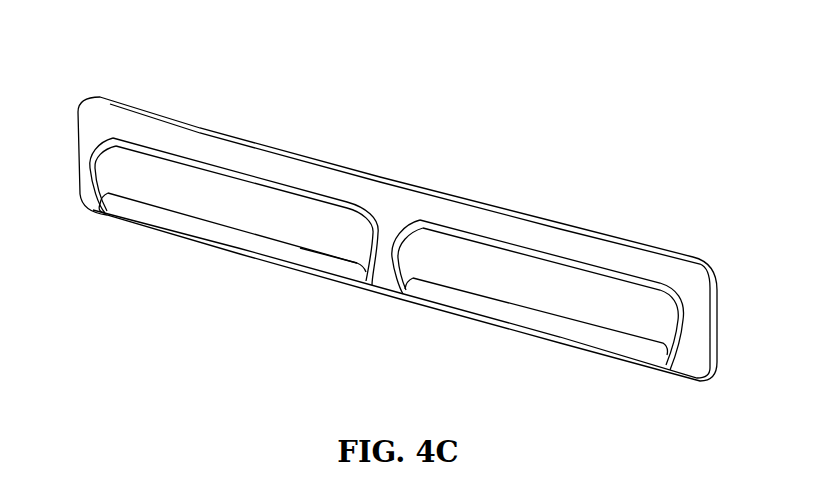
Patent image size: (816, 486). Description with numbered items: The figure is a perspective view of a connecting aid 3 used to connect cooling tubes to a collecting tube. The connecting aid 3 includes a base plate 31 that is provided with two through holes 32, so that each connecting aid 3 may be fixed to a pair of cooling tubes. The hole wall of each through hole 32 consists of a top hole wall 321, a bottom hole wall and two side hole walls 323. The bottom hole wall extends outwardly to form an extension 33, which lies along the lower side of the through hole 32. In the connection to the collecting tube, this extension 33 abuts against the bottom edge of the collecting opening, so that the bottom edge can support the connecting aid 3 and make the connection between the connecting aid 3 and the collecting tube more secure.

The connecting aid 3 is at (230, 54).
The base plate 31 is at (233, 162).
The through hole 32 is at (507, 283).
The extension 33 is at (315, 257).
The top hole wall 321 is at (232, 178).
The side hole wall 323 is at (107, 217).